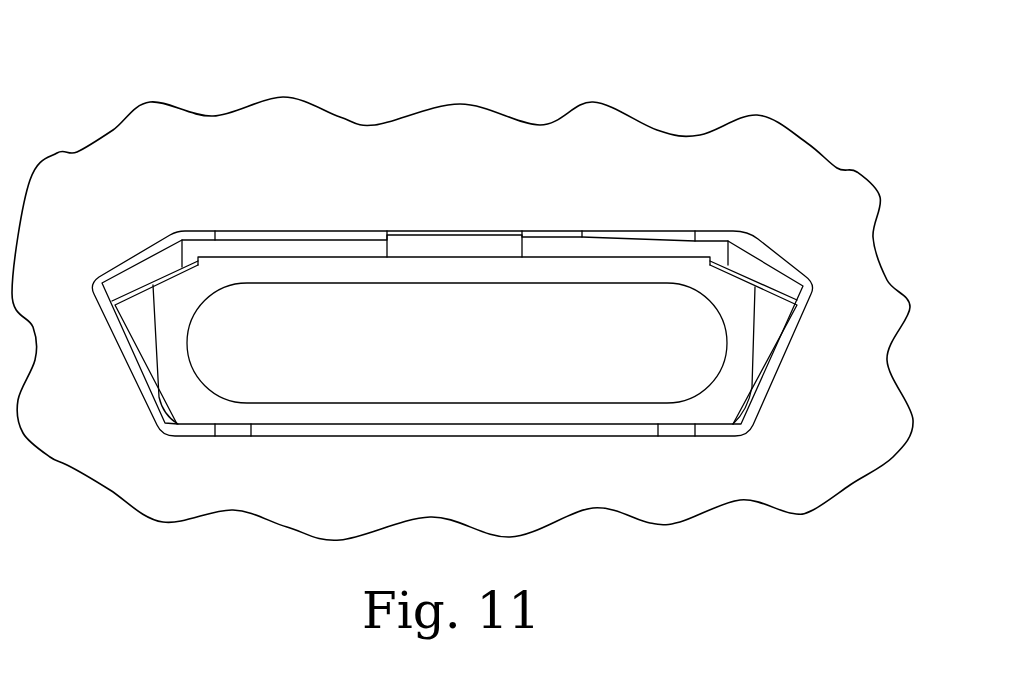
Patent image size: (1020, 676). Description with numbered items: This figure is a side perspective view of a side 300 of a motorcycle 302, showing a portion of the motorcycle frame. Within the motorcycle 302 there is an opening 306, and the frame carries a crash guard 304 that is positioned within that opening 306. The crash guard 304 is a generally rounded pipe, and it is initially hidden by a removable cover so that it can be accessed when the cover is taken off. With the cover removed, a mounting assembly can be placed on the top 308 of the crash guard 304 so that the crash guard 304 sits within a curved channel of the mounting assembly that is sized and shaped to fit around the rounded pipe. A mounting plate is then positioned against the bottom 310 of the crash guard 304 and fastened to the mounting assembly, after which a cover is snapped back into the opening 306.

The side 300 is at (798, 98).
The motorcycle 302 is at (603, 168).
The crash guard 304 is at (705, 362).
The opening 306 is at (270, 230).
The top 308 is at (453, 302).
The bottom 310 is at (398, 405).